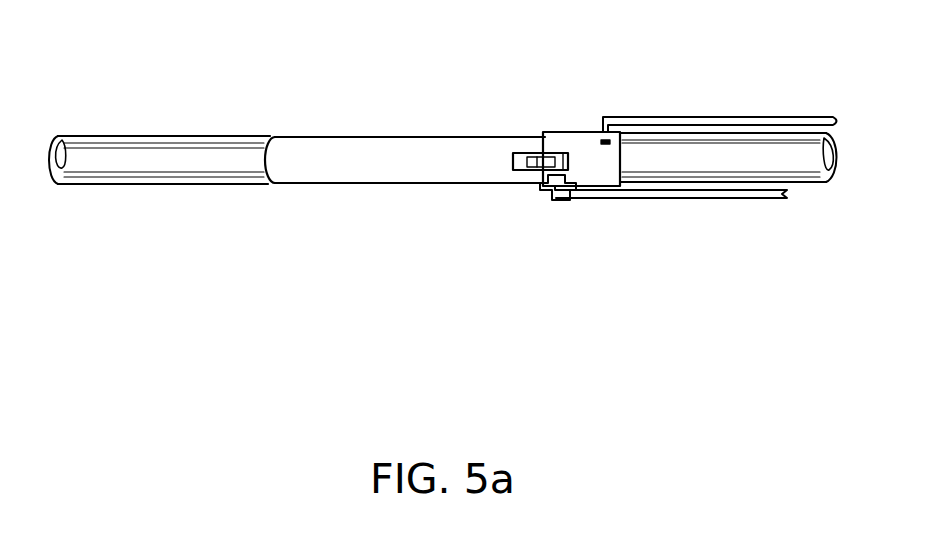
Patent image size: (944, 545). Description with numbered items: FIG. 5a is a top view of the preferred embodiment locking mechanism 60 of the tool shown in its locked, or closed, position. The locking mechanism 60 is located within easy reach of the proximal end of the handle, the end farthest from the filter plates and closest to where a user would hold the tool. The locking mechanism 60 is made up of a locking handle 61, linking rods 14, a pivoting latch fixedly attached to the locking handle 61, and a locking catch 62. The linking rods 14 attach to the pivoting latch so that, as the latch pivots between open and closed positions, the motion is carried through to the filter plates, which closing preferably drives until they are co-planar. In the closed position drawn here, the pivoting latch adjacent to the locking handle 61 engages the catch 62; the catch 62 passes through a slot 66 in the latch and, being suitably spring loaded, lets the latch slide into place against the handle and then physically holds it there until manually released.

The linking rods 14 is at (666, 117).
The locking mechanism 60 is at (573, 50).
The locking handle 61 is at (290, 165).
The locking catch 62 is at (523, 152).
The slot 66 is at (565, 168).